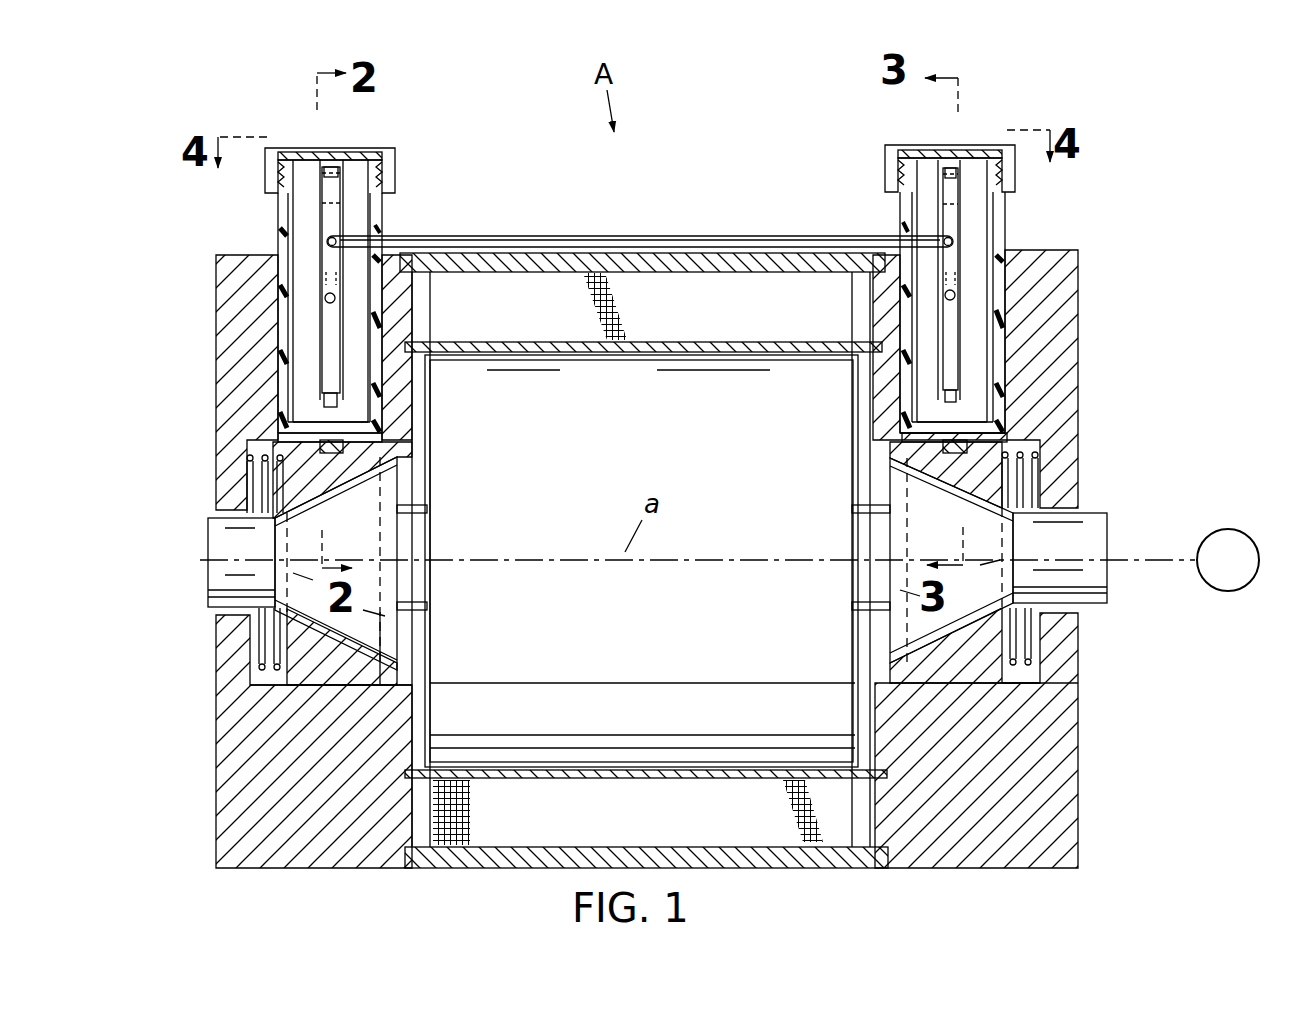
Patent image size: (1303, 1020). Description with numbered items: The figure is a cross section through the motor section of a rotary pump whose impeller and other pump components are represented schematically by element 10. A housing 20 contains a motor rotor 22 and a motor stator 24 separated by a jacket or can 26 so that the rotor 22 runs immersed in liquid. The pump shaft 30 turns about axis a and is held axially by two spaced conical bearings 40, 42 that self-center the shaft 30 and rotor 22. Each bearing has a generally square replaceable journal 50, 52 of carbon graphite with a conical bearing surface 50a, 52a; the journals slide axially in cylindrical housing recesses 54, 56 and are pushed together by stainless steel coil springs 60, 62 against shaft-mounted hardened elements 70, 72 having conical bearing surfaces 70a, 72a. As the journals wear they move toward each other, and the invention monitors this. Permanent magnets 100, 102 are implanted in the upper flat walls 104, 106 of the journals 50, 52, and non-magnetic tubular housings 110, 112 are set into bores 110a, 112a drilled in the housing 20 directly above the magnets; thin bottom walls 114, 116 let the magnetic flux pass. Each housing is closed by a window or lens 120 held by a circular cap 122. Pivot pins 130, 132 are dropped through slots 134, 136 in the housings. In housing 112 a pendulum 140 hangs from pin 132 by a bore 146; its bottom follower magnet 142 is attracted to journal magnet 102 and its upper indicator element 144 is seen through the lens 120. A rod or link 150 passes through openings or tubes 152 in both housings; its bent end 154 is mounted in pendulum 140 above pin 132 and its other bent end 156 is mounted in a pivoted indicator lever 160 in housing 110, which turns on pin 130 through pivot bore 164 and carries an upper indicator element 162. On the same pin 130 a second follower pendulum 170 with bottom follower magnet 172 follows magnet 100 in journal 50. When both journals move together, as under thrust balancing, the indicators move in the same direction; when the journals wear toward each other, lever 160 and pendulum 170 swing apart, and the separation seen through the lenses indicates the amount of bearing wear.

The pump components 10 is at (1248, 538).
The housing 20 is at (1068, 250).
The motor rotor 22 is at (667, 390).
The motor stator 24 is at (743, 293).
The jacket or can 26 is at (585, 347).
The pump shaft 30 is at (1093, 531).
The conical bearing 40 is at (405, 488).
The conical bearing 42 is at (886, 478).
The outer replaceable journal 50 is at (386, 673).
The conical bearing surface 50a is at (338, 497).
The outer replaceable journal 52 is at (900, 447).
The conical bearing surface 52a is at (953, 488).
The cylindrical housing recess 54 is at (262, 672).
The cylindrical housing recess 56 is at (1023, 682).
The stainless steel coil spring 60 is at (247, 459).
The stainless steel coil spring 62 is at (1030, 660).
The shaft mounted element 70 is at (398, 633).
The conical bearing surface 70a is at (352, 647).
The shaft mounted element 72 is at (890, 631).
The conical bearing surface 72a is at (972, 683).
The permanent magnet 100 is at (383, 442).
The permanent magnet 102 is at (1008, 437).
The upper flat wall 104 is at (370, 435).
The upper flat wall 106 is at (977, 440).
The tubular housing 110 is at (274, 208).
The bore 110a is at (278, 316).
The tubular housing 112 is at (1009, 208).
The bore 112a is at (1007, 340).
The bottom wall 114 is at (335, 428).
The bottom wall 116 is at (920, 423).
The window or lens 120 is at (350, 152).
The circular cap 122 is at (396, 163).
The pivot pin 130 is at (276, 318).
The pivot pin 132 is at (956, 292).
The slot 134 is at (331, 165).
The slot 136 is at (946, 166).
The pendulum 140 is at (966, 311).
The follower magnet 142 is at (960, 397).
The indicator element 144 is at (950, 166).
The bore 146 is at (944, 297).
The rod or link 150 is at (588, 240).
The opening or tube 152 is at (383, 232).
The bent end 154 is at (954, 241).
The bent end 156 is at (326, 241).
The pivoted indicator lever 160 is at (320, 270).
The upper indicator element 162 is at (330, 165).
The pivot bore 164 is at (336, 298).
The second follower pendulum 170 is at (318, 376).
The bottom follower magnet 172 is at (330, 402).